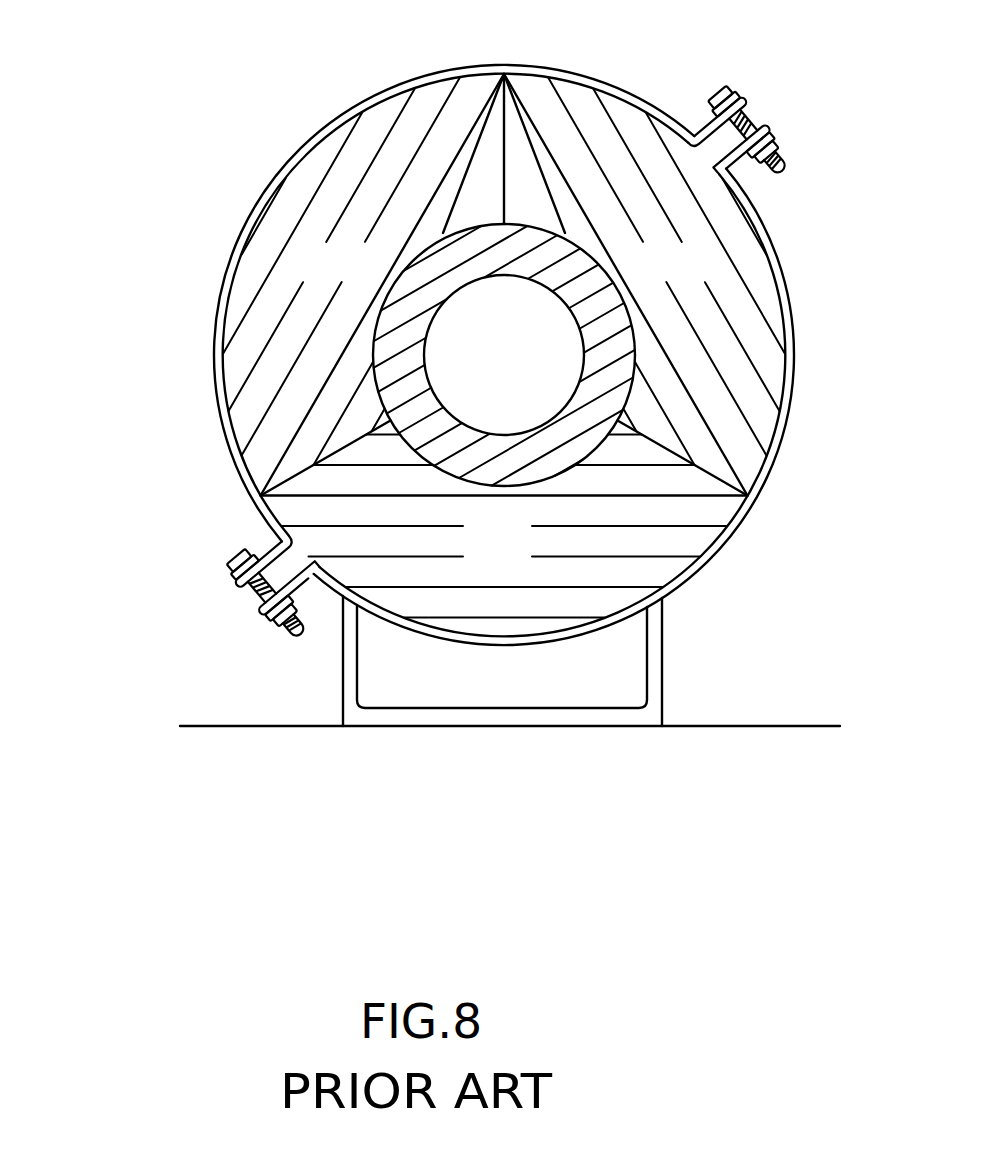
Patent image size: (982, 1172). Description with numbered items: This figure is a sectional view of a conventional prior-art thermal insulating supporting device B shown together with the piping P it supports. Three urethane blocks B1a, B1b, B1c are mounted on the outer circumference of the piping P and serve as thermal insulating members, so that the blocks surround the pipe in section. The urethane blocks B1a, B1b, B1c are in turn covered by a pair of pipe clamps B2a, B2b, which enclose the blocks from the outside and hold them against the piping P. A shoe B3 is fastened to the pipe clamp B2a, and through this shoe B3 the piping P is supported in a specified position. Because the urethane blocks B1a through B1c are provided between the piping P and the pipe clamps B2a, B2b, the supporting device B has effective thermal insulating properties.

The supporting device B is at (440, 365).
The urethane block B1a is at (357, 275).
The urethane block B1b is at (702, 275).
The urethane block B1c is at (530, 549).
The pipe clamp B2a is at (716, 550).
The pipe clamp B2b is at (350, 107).
The shoe B3 is at (653, 657).
The piping P is at (493, 259).